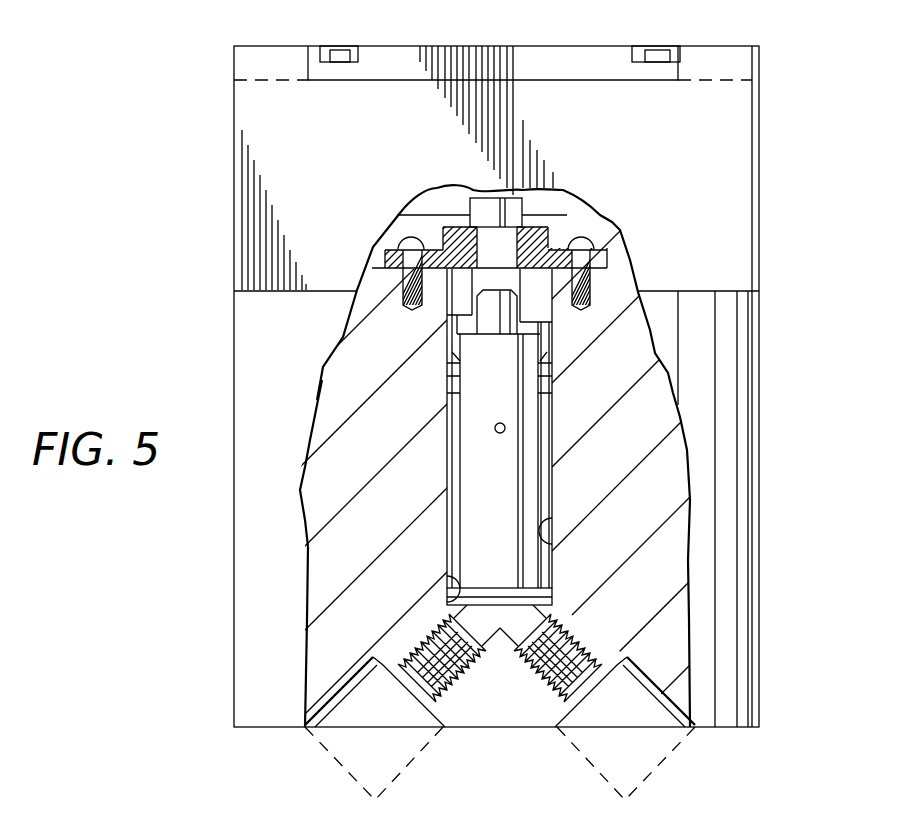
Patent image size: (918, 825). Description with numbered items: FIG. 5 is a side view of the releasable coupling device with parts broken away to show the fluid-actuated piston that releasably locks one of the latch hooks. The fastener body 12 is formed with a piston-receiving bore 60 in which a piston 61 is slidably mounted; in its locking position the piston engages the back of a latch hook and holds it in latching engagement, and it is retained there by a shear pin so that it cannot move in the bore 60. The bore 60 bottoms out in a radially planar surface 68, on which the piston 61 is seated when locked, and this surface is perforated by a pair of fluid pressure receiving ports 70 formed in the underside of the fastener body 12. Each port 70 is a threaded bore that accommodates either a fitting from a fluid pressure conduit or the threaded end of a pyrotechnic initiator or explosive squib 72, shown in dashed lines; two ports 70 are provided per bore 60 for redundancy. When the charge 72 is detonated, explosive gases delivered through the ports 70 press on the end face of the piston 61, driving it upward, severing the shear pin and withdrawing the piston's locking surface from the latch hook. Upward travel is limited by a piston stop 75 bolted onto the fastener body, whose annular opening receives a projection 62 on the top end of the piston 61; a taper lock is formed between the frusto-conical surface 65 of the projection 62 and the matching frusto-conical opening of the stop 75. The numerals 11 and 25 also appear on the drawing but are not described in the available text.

The housing 11 is at (762, 206).
The fastener body 12 is at (760, 478).
The cover plate 25 is at (572, 52).
The piston stop 75 is at (545, 234).
The projection 62 is at (480, 311).
The frusto-conical surface 65 is at (508, 327).
The piston 61 is at (502, 486).
The piston-receiving bore 60 is at (553, 546).
The radially planar surface 68 is at (447, 578).
The fluid pressure receiving ports 70 is at (410, 685).
The pyrotechnic initiator or explosive squib 72 is at (422, 755).